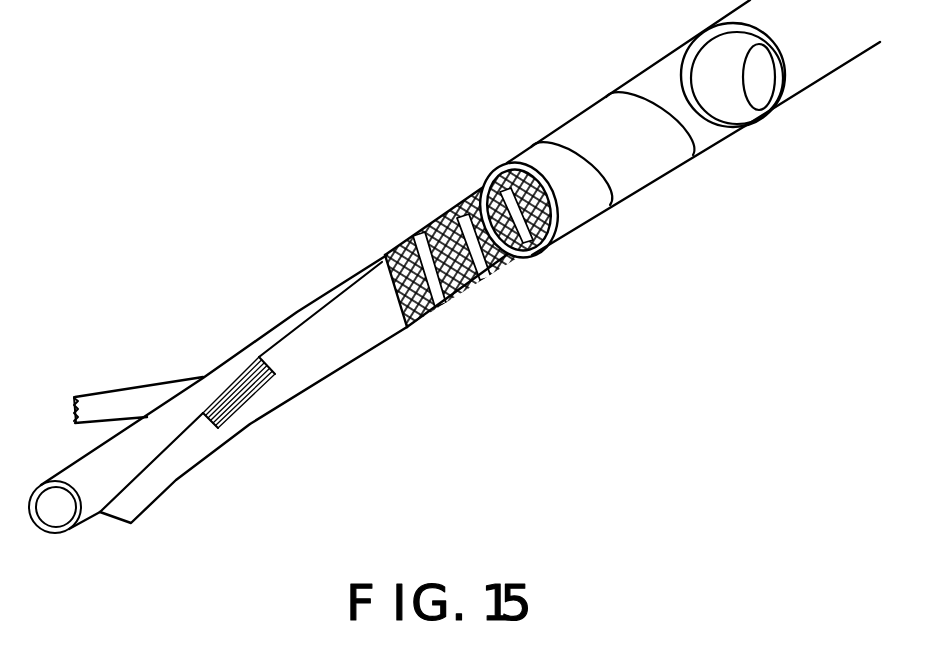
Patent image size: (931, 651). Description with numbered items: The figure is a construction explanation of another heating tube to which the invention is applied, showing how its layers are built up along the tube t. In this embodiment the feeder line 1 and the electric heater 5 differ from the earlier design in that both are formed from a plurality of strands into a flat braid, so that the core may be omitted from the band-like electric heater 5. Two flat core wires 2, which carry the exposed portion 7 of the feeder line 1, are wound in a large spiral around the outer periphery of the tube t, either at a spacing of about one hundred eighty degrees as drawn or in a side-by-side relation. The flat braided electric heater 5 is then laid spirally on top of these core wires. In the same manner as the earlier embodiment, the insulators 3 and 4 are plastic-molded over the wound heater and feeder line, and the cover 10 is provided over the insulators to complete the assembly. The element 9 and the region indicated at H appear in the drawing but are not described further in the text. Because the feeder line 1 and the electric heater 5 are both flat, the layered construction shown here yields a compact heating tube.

The feeder line 1 is at (186, 352).
The flat core wires 2 is at (75, 397).
The insulator 3 is at (133, 393).
The insulator 4 is at (588, 197).
The electric heater 5 is at (420, 310).
The exposed portion 7 is at (240, 404).
The inner ring 9 is at (725, 113).
The cover 10 is at (812, 72).
The connector housing H is at (485, 133).
The tube t is at (88, 512).